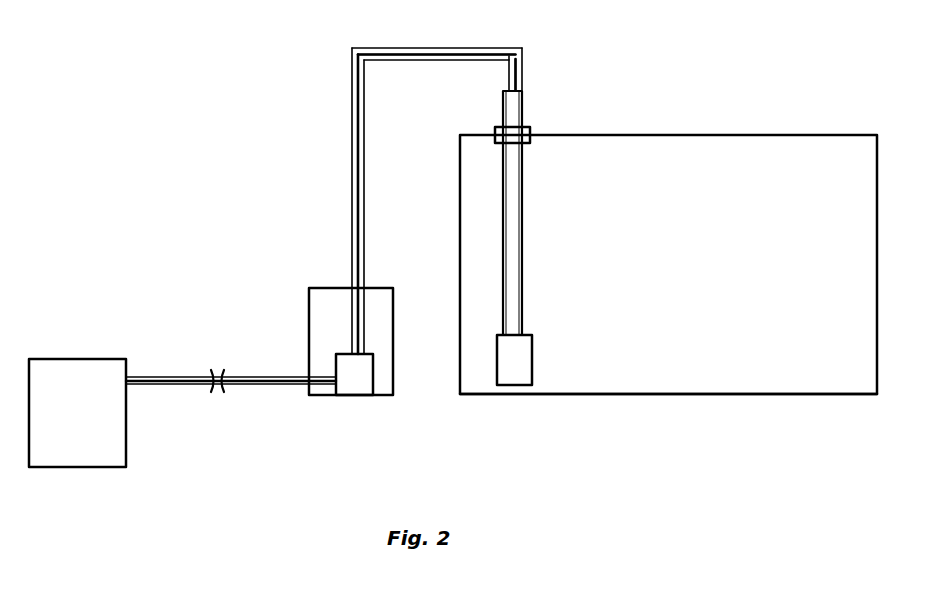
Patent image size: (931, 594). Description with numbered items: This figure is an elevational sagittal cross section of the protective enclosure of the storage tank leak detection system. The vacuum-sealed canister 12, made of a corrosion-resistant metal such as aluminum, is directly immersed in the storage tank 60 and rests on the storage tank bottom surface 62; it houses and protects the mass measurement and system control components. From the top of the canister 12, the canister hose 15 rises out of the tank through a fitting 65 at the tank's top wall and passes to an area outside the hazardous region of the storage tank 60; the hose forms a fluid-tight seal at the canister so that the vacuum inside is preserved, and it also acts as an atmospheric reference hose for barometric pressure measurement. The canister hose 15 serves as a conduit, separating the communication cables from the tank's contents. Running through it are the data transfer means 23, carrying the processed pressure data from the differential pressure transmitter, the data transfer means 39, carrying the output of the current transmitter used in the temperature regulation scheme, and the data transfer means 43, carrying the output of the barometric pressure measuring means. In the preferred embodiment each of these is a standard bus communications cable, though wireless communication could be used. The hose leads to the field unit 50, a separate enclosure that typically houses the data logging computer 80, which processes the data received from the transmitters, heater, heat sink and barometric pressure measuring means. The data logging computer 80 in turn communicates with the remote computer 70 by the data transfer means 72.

The vacuum-sealed canister 12 is at (522, 362).
The canister hose 15 is at (523, 226).
The data transfer means 23 is at (352, 50).
The data transfer means 39 is at (435, 48).
The data transfer means 43 is at (522, 50).
The field unit 50 is at (309, 325).
The storage tank 60 is at (712, 208).
The storage tank bottom surface 62 is at (650, 395).
The fitting 65 is at (530, 133).
The remote computer 70 is at (87, 423).
The data transfer means 72 is at (160, 376).
The data logging computer 80 is at (357, 383).